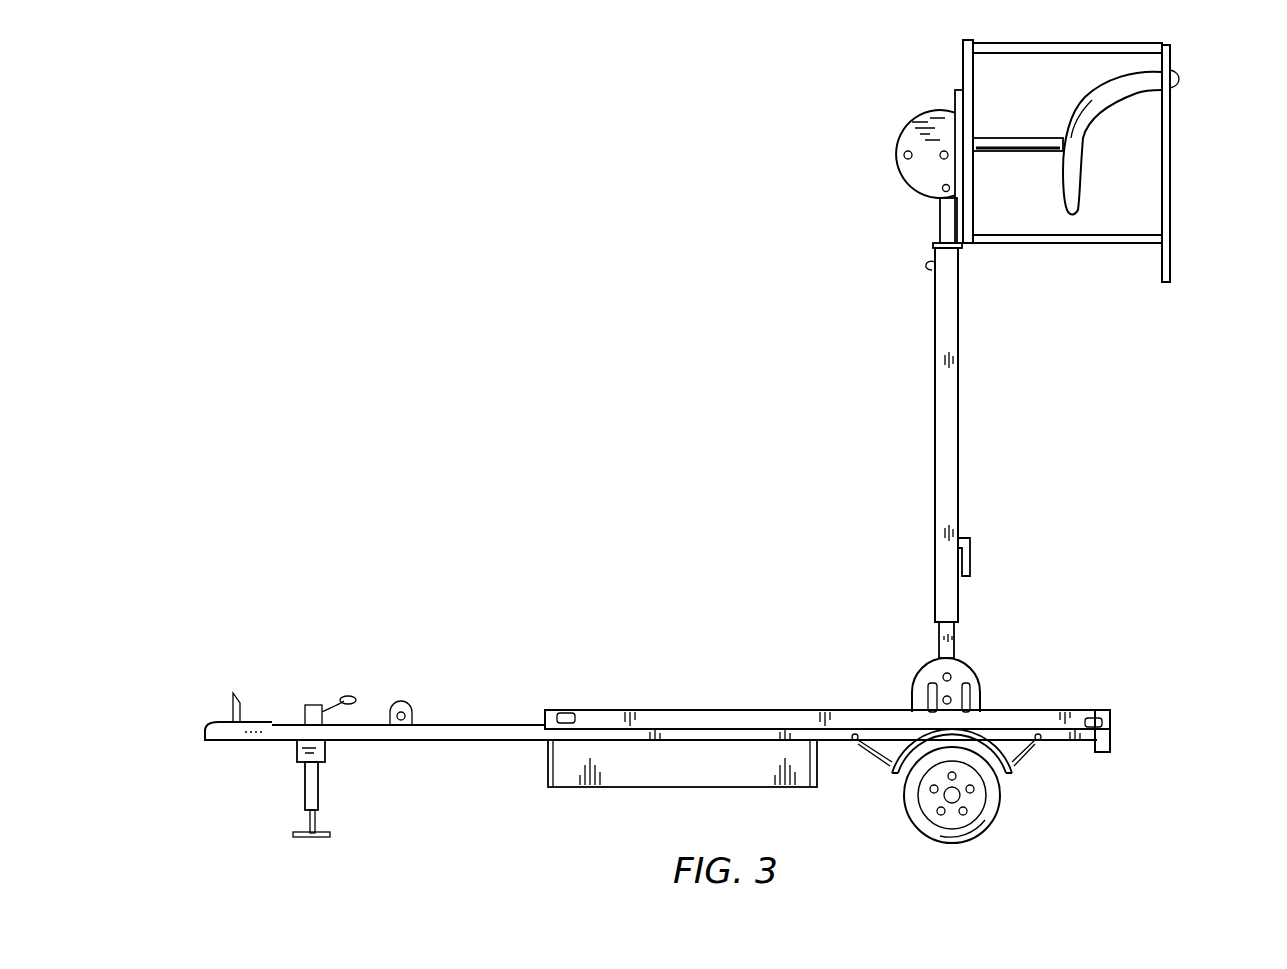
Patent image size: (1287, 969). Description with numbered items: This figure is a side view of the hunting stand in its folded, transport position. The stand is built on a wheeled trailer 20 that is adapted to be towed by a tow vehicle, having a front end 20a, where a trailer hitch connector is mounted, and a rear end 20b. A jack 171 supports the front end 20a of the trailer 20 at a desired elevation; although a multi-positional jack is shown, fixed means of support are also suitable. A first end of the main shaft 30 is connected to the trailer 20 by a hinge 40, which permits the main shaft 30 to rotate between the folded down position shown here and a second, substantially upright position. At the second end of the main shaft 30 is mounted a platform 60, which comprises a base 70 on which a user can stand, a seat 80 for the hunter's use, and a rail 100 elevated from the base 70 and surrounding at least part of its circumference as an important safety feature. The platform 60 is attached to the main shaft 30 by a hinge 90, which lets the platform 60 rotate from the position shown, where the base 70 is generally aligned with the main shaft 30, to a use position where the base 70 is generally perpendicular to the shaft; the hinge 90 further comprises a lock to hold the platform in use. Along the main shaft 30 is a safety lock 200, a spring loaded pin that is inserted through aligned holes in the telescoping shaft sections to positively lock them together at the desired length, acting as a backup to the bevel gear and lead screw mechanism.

The wheeled trailer 20 is at (455, 740).
The front end of trailer 20a is at (205, 762).
The rear end of trailer 20b is at (1118, 722).
The main shaft 30 is at (947, 430).
The hinge 40 is at (966, 672).
The platform 60 is at (932, 42).
The base 70 is at (973, 80).
The seat 80 is at (1097, 107).
The hinge 90 is at (925, 172).
The rail 100 is at (1170, 192).
The jack 171 is at (320, 790).
The safety lock 200 is at (968, 540).